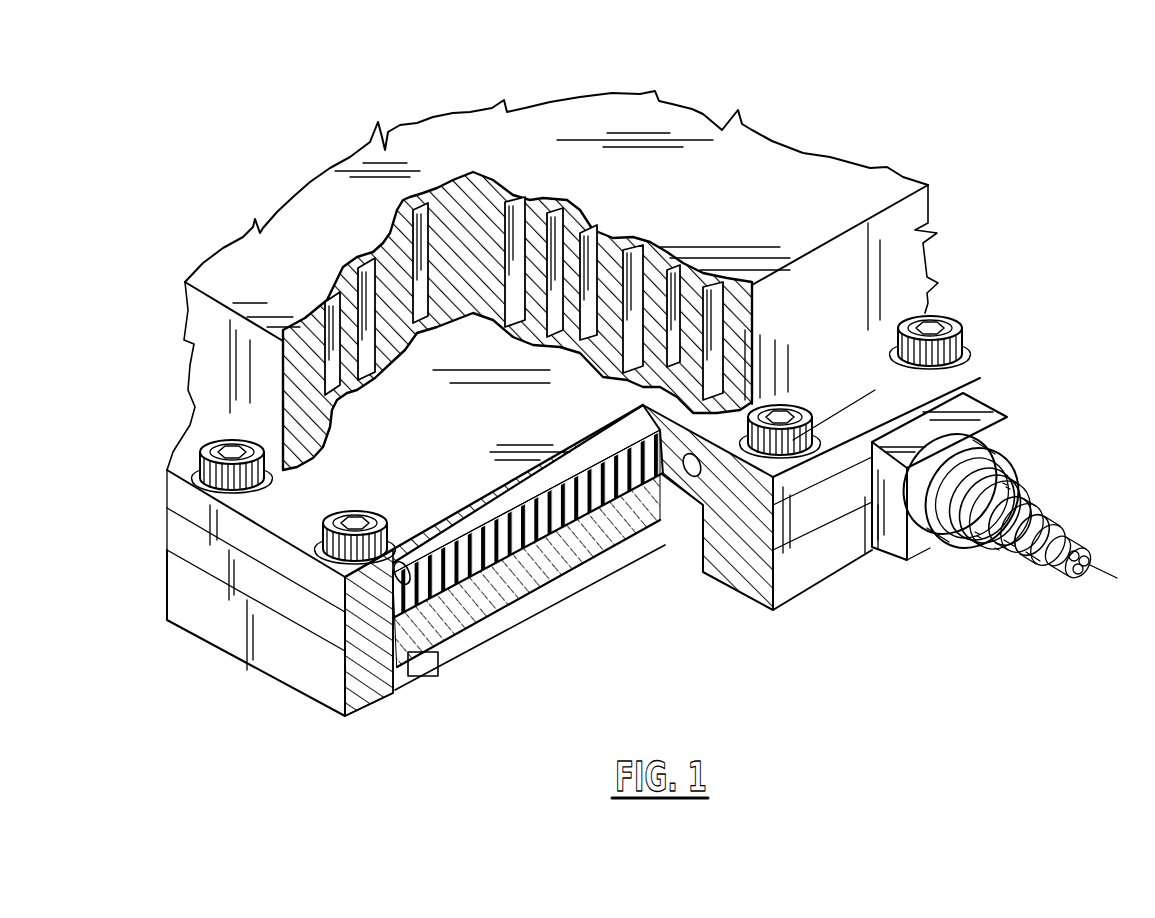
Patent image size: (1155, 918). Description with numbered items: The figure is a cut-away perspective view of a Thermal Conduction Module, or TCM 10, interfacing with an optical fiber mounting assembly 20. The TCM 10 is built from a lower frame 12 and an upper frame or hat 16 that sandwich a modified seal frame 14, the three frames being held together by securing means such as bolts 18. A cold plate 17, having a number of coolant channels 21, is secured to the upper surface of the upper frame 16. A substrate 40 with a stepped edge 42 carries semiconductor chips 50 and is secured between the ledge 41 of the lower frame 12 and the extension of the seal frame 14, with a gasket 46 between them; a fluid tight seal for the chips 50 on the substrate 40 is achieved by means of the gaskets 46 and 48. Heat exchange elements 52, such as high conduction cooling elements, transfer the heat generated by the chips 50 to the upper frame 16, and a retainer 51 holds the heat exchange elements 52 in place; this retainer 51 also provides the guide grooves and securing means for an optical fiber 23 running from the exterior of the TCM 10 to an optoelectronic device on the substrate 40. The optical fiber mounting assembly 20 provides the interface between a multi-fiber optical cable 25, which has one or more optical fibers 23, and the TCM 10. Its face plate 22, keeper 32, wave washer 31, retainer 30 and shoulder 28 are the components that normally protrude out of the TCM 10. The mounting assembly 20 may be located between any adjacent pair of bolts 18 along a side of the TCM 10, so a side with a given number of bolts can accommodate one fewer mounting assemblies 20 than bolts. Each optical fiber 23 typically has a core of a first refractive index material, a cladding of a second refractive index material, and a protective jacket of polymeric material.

The Thermal Conduction Module 10 is at (655, 638).
The lower frame 12 is at (180, 593).
The seal frame 14 is at (170, 533).
The upper frame 16 is at (167, 487).
The cold plate 17 is at (708, 108).
The bolts 18 is at (368, 508).
The optical fiber mounting assembly 20 is at (1020, 400).
The coolant channels 21 is at (714, 290).
The face plate 22 is at (898, 552).
The optical fiber 23 is at (1053, 557).
The multi-fiber optical cable 25 is at (1003, 553).
The shoulder 28 is at (1017, 488).
The retainer 30 is at (1010, 460).
The wave washer 31 is at (1008, 448).
The keeper 32 is at (927, 547).
The substrate 40 is at (603, 562).
The ledge 41 is at (400, 680).
The stepped edge 42 is at (413, 657).
The gasket 46 is at (380, 672).
The gasket 48 is at (400, 560).
The semiconductor chips 50 is at (570, 535).
The retainer 51 is at (515, 555).
The heat exchange elements 52 is at (487, 640).